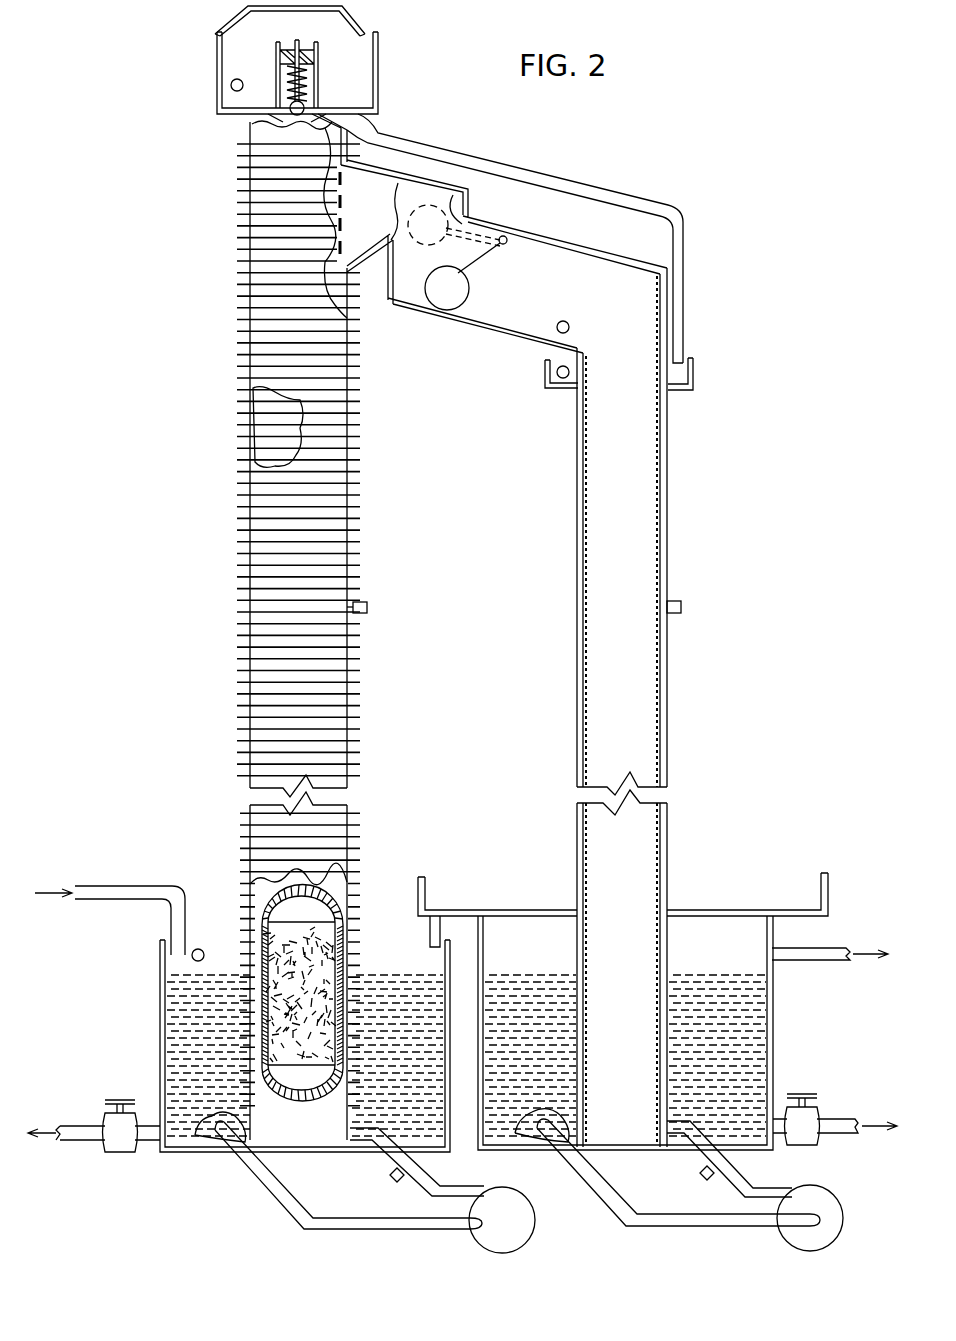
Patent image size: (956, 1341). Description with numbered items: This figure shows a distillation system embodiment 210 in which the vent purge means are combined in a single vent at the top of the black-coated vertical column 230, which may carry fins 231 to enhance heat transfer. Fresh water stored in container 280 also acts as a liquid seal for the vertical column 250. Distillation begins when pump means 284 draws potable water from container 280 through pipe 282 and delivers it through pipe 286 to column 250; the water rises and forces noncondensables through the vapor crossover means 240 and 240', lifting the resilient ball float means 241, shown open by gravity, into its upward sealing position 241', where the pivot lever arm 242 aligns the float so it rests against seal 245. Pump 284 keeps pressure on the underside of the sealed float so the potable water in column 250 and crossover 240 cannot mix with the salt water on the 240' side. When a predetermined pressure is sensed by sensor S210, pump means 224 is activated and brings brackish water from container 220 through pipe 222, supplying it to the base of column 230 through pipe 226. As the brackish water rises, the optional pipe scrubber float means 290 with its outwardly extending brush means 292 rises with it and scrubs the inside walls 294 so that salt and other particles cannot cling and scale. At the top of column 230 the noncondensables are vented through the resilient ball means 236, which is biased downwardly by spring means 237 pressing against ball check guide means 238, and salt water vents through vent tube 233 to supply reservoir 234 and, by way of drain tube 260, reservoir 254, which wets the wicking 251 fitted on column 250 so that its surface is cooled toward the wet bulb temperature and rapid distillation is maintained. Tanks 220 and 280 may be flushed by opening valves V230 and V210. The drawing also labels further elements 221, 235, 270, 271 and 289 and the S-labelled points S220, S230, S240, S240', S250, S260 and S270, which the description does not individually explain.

The embodiment 210 is at (718, 712).
The container 220 is at (412, 970).
The liquid inlet pipe 221 is at (86, 887).
The pipe 222 is at (405, 1230).
The pump means 224 is at (517, 1241).
The pipe 226 is at (420, 1180).
The vertical column 230 is at (305, 578).
The fins 231 is at (240, 585).
The vent tube 233 is at (268, 118).
The reservoir 234 is at (217, 57).
The cap 235 is at (366, 28).
The resilient ball means 236 is at (306, 108).
The spring means 237 is at (308, 82).
The ball check guide means 238 is at (320, 58).
The vapor crossover means 240 is at (504, 256).
The vapor crossover means 240' is at (370, 213).
The resilient ball float means 241 is at (430, 305).
The ball float seal means 241' is at (468, 214).
The pivot lever arm 242 is at (505, 250).
The seal 245 is at (470, 198).
The vertical column 250 is at (620, 565).
The wetting wicking 251 is at (577, 584).
The reservoir 254 is at (693, 375).
The drain tube 260 is at (441, 156).
The tray 270 is at (730, 908).
The overflow pipe 271 is at (435, 916).
The storage container 280 is at (727, 950).
The pipe 282 is at (726, 1228).
The pump means 284 is at (827, 1241).
The pipe 286 is at (740, 1178).
The liquid outlet 289 is at (830, 940).
The pipe scrubber float means 290 is at (318, 1085).
The descaling brush means 292 is at (258, 892).
The inside walls 294 is at (392, 268).
The sensor S210 is at (703, 1170).
The sensor S220 is at (392, 1172).
The sensor S230 is at (191, 957).
The sensor S240 is at (192, 87).
The sensor S240' is at (524, 380).
The sensor S250 is at (556, 333).
The sensor S260 is at (368, 607).
The sensor S270 is at (681, 607).
The valve V210 is at (817, 1147).
The valve V230 is at (115, 1152).